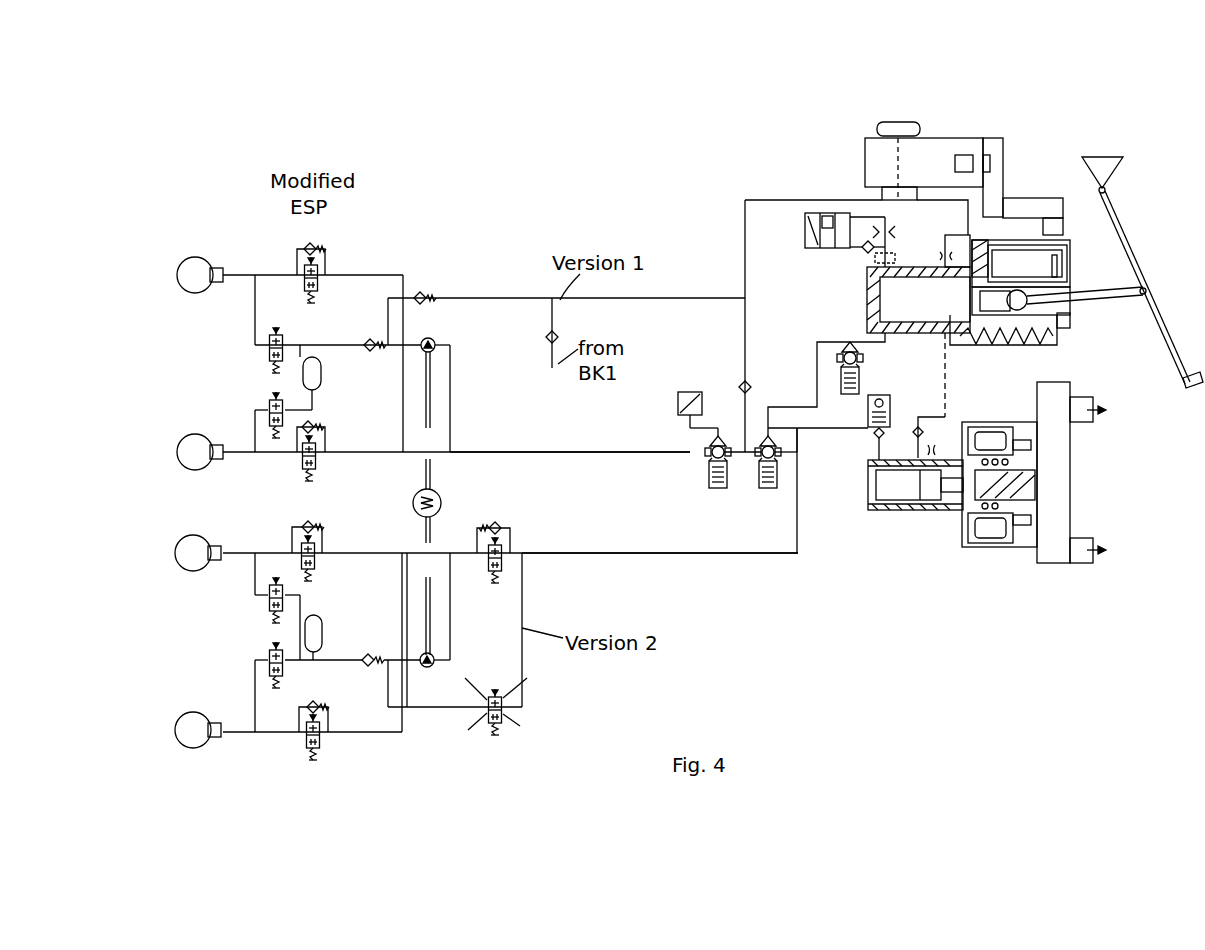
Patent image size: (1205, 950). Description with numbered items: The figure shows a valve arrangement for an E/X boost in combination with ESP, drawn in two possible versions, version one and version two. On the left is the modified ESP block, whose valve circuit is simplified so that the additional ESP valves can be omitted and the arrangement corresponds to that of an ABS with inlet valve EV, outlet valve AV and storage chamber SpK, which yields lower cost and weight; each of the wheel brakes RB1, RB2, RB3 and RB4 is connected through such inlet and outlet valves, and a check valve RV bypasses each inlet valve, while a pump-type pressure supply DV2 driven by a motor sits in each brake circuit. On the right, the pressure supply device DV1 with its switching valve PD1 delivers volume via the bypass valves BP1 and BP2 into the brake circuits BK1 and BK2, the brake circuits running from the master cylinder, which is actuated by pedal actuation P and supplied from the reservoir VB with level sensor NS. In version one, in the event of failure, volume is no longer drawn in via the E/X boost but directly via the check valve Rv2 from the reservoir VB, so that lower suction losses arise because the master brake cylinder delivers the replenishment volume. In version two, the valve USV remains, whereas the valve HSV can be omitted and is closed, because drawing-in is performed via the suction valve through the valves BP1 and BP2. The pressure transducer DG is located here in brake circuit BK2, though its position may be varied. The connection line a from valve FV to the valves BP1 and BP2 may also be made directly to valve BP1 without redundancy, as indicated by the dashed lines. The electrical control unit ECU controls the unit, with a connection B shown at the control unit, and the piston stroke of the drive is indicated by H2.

The wheel brake RB1 is at (193, 747).
The wheel brake RB2 is at (178, 564).
The wheel brake RB3 is at (184, 455).
The wheel brake RB4 is at (188, 277).
The check valve RV is at (770, 358).
The check valve Rv2 is at (425, 295).
The outlet valve AV is at (270, 693).
The inlet valve EV is at (317, 757).
The storage chamber SpK is at (313, 637).
The pressure supply DV2 is at (434, 343).
The changeover valve USV is at (503, 573).
The high-pressure switching valve HSV is at (503, 718).
The brake circuit 1 BK1 is at (784, 556).
The brake circuit 2 BK2 is at (617, 448).
The pressure transducer DG is at (680, 391).
The bypass valve 1 BP1 is at (776, 475).
The bypass valve 2 BP2 is at (710, 475).
The connection line a is at (800, 432).
The valve FV is at (866, 360).
The switching valve PD1 is at (886, 405).
The pressure supply device DV1 is at (948, 512).
The electrical control unit ECU is at (1053, 487).
The bus connection B is at (1114, 410).
The piston stroke / travel H2 is at (1043, 344).
The reservoir VB is at (937, 155).
The level sensor NS is at (1003, 165).
The pedal actuation P is at (1130, 240).